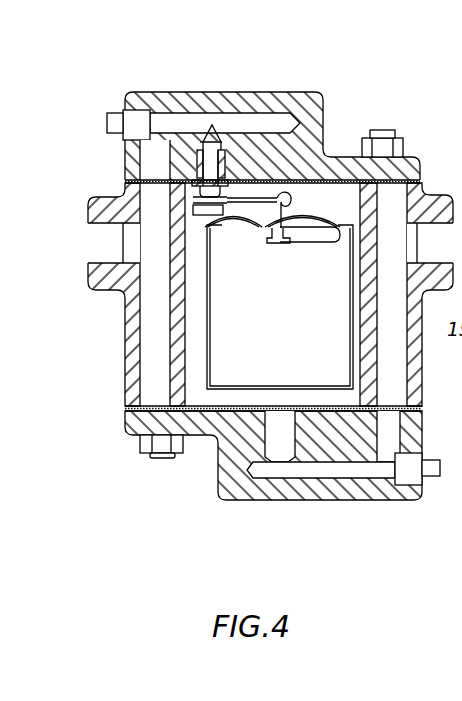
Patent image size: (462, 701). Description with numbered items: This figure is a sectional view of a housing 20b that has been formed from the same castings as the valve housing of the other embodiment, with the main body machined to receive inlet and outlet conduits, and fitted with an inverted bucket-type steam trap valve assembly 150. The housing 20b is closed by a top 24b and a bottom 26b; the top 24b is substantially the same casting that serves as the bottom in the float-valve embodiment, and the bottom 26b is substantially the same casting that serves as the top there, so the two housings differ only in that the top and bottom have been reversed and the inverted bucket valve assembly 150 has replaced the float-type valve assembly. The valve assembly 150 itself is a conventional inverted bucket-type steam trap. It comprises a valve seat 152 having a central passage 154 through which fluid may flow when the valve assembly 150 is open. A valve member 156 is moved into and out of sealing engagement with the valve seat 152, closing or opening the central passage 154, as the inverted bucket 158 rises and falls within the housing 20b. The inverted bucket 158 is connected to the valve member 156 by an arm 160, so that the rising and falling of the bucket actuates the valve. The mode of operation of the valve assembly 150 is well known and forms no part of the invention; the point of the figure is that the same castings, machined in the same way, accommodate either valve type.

The housing 20b is at (110, 188).
The top 24b is at (322, 97).
The bottom 26b is at (394, 497).
The inverted bucket-type steam trap valve assembly 150 is at (205, 246).
The valve seat 152 is at (228, 163).
The central passage 154 is at (208, 123).
The valve member 156 is at (224, 216).
The inverted bucket 158 is at (212, 324).
The arm 160 is at (262, 222).